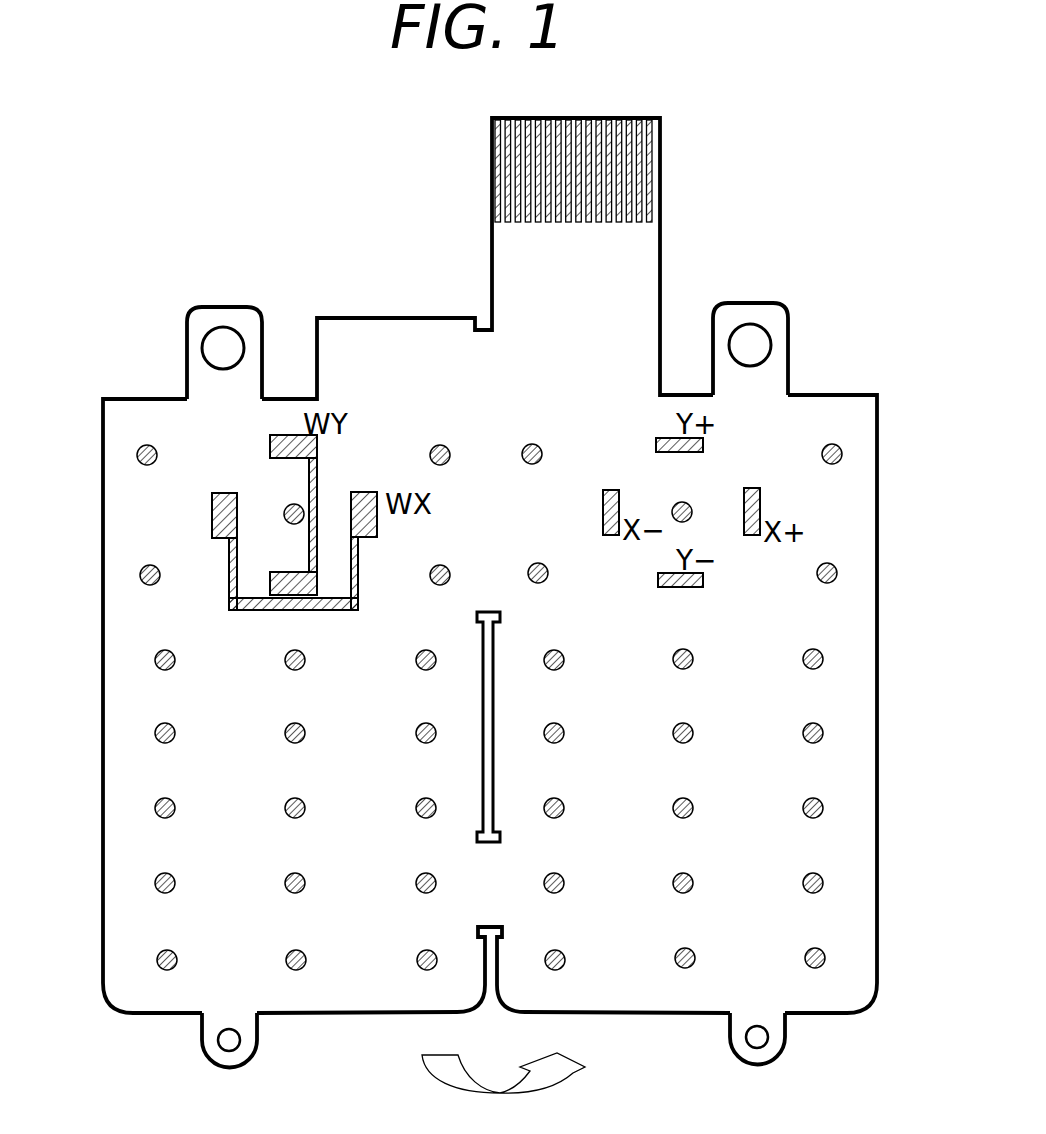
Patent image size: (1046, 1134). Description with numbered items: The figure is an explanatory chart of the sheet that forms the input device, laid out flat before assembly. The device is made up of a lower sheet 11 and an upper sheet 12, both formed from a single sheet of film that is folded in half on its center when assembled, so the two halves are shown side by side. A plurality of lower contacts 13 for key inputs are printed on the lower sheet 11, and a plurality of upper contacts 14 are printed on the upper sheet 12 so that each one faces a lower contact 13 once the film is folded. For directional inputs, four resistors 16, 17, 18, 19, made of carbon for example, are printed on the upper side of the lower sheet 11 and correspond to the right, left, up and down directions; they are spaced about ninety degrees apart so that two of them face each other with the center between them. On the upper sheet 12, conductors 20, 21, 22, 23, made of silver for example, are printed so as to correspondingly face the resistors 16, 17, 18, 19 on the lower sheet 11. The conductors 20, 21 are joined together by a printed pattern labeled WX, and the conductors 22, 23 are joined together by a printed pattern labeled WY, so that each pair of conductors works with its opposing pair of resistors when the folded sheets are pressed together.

The lower sheet 11 is at (757, 303).
The upper sheet 12 is at (225, 307).
The lower contacts 13 is at (830, 950).
The upper contacts 14 is at (158, 962).
The resistor (X+) 16 is at (762, 500).
The resistor (X−) 17 is at (608, 540).
The resistor (Y+) 18 is at (672, 437).
The resistor (Y−) 19 is at (690, 587).
The conductor (X+) 20 is at (212, 513).
The conductor (X−) 21 is at (358, 492).
The conductor (Y+) 22 is at (295, 435).
The conductor (Y−) 23 is at (270, 582).